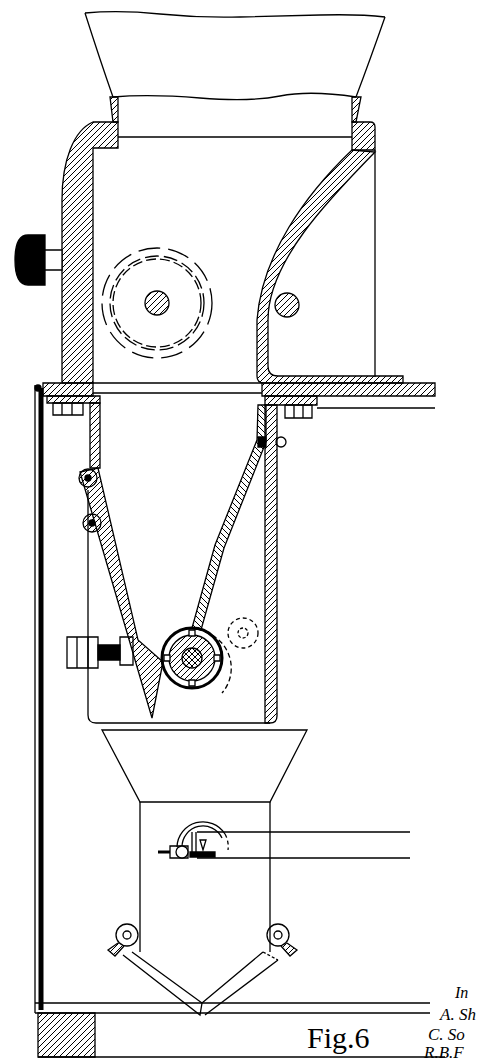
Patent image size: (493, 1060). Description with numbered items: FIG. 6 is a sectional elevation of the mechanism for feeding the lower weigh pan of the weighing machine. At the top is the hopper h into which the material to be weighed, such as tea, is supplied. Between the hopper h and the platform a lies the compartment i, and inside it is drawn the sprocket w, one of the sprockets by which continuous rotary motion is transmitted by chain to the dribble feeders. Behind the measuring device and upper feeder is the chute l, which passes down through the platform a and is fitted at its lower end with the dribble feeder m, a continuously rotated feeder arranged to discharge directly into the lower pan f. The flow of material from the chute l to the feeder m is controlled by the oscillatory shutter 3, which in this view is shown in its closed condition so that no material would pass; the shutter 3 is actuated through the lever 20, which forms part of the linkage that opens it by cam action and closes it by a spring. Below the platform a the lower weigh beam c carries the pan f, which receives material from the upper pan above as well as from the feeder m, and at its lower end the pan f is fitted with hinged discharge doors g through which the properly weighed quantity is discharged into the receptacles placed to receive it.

The hopper h is at (235, 67).
The compartment i is at (300, 210).
The sprocket w is at (175, 256).
The platform a is at (416, 384).
The chute l is at (176, 563).
The oscillatory shutter 3 is at (170, 639).
The lever 20 is at (226, 635).
The dribble feeder m is at (212, 680).
The weigh beam c is at (373, 840).
The pan f is at (148, 888).
The discharge doors g is at (182, 986).